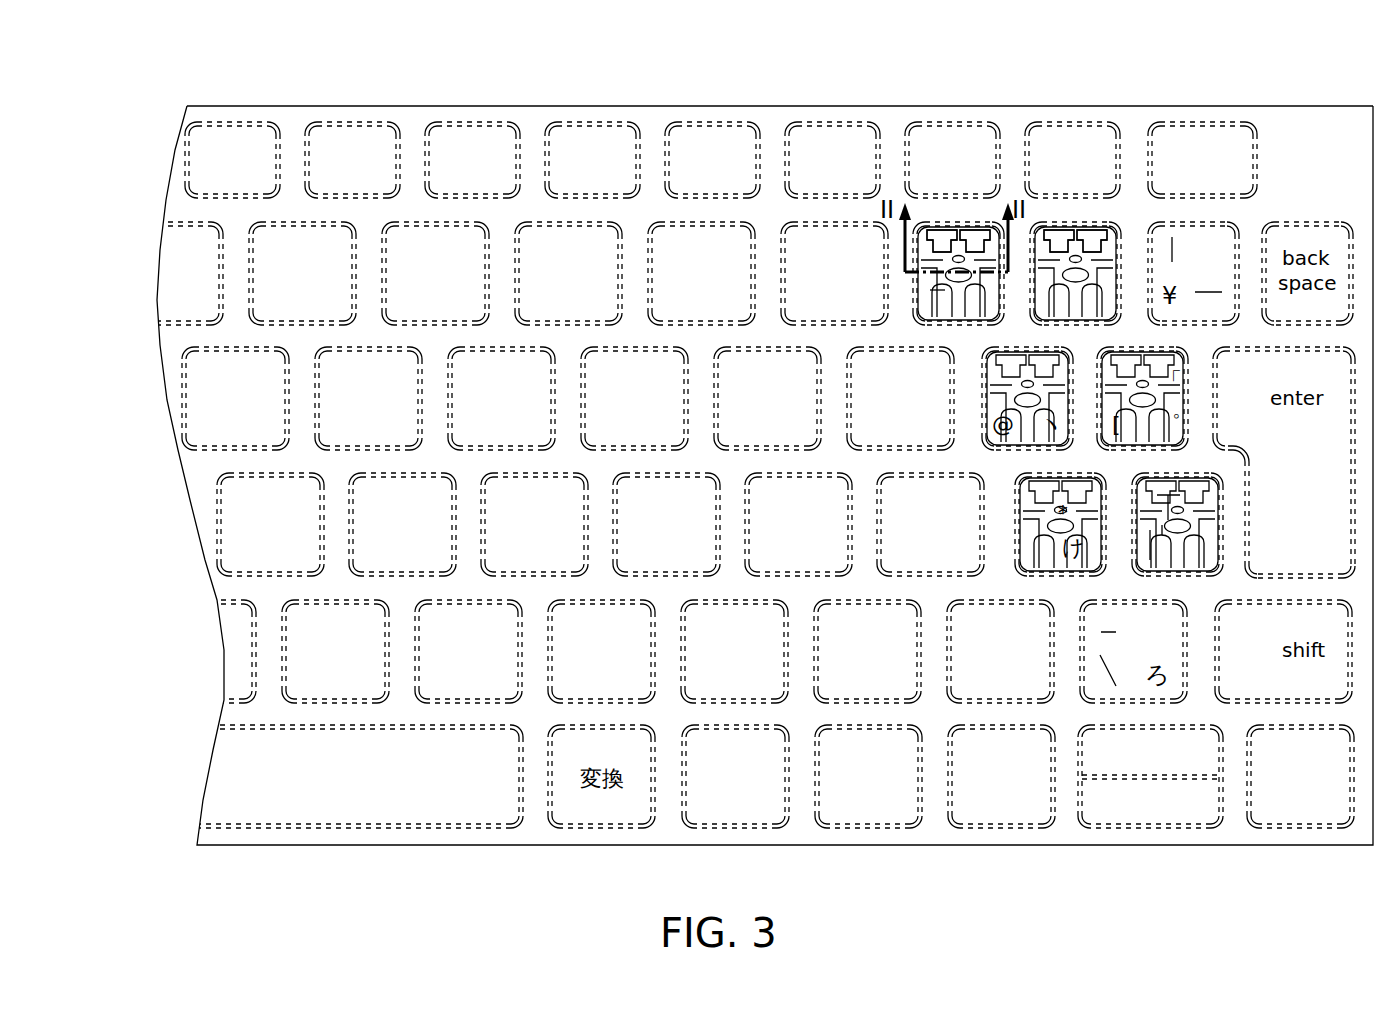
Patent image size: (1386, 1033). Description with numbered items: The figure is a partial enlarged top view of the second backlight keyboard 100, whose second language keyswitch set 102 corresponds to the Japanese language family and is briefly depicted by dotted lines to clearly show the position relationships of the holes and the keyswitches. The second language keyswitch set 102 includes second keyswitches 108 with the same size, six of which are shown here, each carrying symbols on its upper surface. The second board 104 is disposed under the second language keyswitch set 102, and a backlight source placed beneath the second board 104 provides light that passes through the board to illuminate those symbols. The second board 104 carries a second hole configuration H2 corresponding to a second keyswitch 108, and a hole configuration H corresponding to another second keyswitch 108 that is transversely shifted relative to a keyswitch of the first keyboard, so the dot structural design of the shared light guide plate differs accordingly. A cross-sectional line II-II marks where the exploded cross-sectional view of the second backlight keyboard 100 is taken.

The second backlight keyboard 100 is at (142, 78).
The second language keyswitch set 102 is at (235, 102).
The second board 104 is at (1294, 106).
The second keyswitch 108 is at (933, 327).
The hole configuration H is at (1188, 563).
The second hole configuration H2 is at (1105, 213).